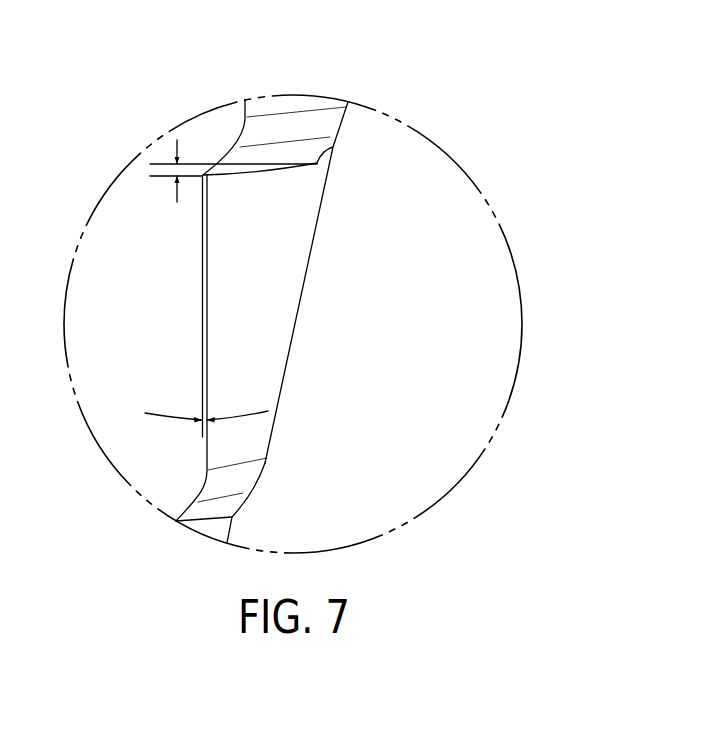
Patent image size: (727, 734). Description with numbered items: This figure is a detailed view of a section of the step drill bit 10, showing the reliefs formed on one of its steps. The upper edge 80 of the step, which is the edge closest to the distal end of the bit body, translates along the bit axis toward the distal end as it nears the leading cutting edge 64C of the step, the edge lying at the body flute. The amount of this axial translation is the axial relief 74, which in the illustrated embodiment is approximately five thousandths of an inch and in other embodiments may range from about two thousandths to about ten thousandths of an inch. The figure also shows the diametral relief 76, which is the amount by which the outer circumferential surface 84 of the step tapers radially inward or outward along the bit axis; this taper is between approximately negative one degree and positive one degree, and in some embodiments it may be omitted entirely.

The step drill bit 10 is at (191, 76).
The leading cutting edge 64C is at (297, 290).
The axial relief 74 is at (176, 193).
The diametral relief 76 is at (163, 413).
The upper edge 80 is at (328, 150).
The outer circumferential surface 84 is at (222, 275).